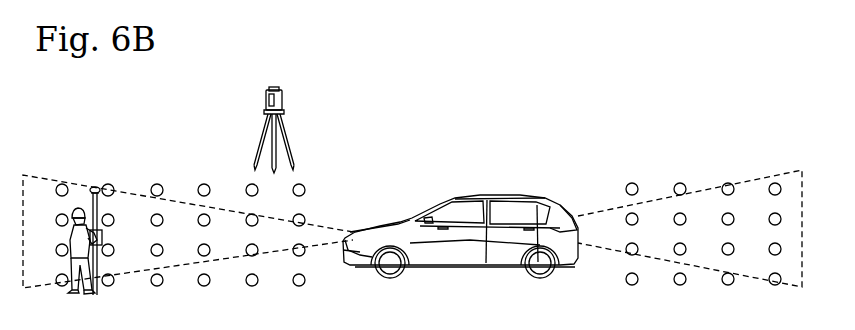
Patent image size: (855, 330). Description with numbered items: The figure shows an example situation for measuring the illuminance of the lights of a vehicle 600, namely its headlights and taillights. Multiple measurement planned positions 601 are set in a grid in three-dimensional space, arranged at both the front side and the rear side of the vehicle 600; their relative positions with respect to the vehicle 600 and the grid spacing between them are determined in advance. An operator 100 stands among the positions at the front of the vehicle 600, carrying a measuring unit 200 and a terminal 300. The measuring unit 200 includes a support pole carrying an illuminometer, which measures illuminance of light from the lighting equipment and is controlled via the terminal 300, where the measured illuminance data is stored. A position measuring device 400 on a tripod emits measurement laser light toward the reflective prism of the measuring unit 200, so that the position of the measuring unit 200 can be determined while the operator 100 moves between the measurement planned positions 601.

The operator 100 is at (66, 235).
The measuring unit 200 is at (101, 259).
The terminal 300 is at (103, 240).
The position measuring device 400 is at (289, 101).
The vehicle 600 is at (515, 195).
The measurement planned positions 601 is at (157, 184).